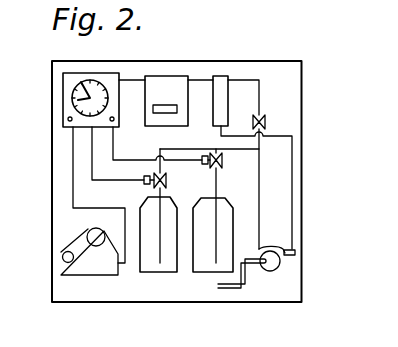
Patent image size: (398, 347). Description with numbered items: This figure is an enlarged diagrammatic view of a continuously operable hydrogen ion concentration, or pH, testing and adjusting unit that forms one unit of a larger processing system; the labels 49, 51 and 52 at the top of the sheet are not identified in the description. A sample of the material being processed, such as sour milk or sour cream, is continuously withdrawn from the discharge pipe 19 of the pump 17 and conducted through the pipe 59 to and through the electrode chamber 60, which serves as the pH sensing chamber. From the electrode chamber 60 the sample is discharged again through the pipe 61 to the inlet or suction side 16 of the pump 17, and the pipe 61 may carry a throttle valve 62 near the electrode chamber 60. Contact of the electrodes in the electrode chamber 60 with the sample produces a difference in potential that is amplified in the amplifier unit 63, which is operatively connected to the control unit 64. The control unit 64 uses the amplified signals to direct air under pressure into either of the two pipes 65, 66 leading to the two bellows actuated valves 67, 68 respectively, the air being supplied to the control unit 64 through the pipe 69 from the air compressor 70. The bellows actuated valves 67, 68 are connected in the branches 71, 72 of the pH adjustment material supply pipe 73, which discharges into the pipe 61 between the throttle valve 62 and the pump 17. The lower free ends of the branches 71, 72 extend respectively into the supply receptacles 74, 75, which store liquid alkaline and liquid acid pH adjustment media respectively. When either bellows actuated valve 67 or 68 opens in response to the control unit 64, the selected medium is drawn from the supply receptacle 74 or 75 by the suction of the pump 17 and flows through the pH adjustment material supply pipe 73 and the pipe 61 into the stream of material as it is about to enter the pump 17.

The inlet or suction side 16 is at (228, 289).
The pump 17 is at (272, 271).
The discharge pipe 19 is at (298, 262).
The element 49 is at (234, 0).
The element 51 is at (286, 0).
The element 52 is at (308, 0).
The pipe 59 is at (295, 157).
The electrode chamber 60 is at (222, 83).
The pipe 61 is at (260, 206).
The throttle valve 62 is at (264, 123).
The amplifier unit 63 is at (168, 85).
The control unit 64 is at (63, 80).
The pipe 65 is at (90, 145).
The pipe 66 is at (113, 142).
The bellows actuated valve 67 is at (144, 178).
The bellows actuated valve 68 is at (203, 166).
The pipe 69 is at (73, 210).
The air compressor 70 is at (96, 275).
The branch 71 is at (157, 192).
The branch 72 is at (218, 185).
The pH adjustment material supply pipe 73 is at (173, 148).
The supply receptacle 74 is at (167, 274).
The supply receptacle 75 is at (199, 274).